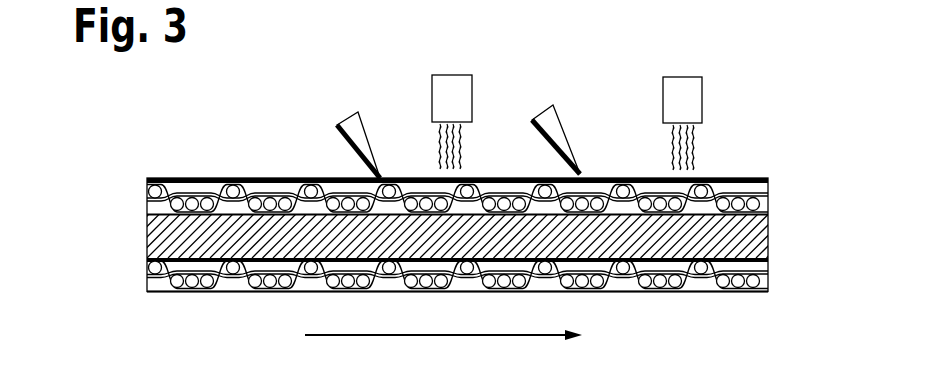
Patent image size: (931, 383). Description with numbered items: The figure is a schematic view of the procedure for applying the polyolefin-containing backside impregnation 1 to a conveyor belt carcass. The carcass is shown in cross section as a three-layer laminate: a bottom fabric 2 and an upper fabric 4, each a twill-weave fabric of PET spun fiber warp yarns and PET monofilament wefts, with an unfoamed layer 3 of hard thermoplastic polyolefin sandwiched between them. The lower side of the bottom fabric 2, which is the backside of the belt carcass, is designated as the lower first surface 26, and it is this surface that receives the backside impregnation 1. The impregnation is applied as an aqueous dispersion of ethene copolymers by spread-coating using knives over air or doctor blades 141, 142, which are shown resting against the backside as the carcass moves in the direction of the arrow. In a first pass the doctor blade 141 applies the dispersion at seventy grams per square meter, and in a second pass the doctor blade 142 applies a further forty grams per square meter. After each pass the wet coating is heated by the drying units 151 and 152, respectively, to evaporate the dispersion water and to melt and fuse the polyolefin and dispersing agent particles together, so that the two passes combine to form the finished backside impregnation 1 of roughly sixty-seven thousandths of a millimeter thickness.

The backside impregnation 1 is at (745, 178).
The bottom fabric 2 is at (147, 194).
The TPO layer 3 is at (147, 236).
The upper fabric 4 is at (147, 279).
The lower first surface 26 is at (177, 169).
The knife over air or doctor blade 141 is at (347, 123).
The knife over air or doctor blade 142 is at (550, 117).
The drying unit 151 is at (453, 90).
The drying unit 152 is at (686, 100).